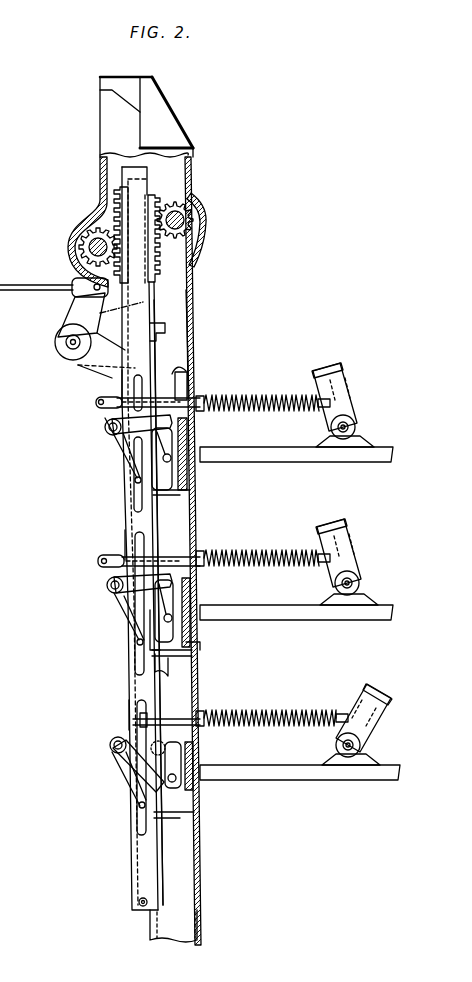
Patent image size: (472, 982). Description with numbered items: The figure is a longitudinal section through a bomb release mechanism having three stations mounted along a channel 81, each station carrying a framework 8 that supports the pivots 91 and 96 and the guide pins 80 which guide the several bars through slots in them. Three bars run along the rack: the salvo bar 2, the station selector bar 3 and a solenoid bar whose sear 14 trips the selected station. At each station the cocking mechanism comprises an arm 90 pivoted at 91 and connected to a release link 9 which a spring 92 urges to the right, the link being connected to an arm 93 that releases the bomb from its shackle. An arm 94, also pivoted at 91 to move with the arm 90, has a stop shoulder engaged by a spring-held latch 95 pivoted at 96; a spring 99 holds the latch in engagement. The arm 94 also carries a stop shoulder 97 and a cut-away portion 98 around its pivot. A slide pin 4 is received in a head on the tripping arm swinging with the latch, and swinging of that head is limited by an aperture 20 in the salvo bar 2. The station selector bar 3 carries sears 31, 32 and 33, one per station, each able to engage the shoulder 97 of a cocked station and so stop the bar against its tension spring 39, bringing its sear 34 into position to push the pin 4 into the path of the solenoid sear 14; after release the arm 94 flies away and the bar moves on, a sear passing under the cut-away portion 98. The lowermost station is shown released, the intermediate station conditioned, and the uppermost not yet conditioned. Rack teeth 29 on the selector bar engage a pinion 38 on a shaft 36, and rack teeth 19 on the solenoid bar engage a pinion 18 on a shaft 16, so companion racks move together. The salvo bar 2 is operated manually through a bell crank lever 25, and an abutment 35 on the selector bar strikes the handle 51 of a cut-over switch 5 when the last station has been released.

The salvo bar 2 is at (170, 497).
The station selector bar 3 is at (128, 512).
The slide pin 4 is at (163, 745).
The cut-over switch 5 is at (197, 383).
The framework 8 is at (197, 643).
The release link 9 is at (171, 719).
The sear 14 is at (150, 623).
The shaft 16 is at (196, 222).
The pinion 18 is at (183, 212).
The rack teeth 19 is at (161, 265).
The aperture 20 is at (163, 676).
The bell crank lever 25 is at (80, 303).
The rack teeth 29 is at (116, 201).
The sear 31 is at (126, 705).
The sear 32 is at (124, 541).
The sear 33 is at (120, 385).
The sear 34 is at (200, 779).
The abutment 35 is at (163, 325).
The shaft 36 is at (88, 246).
The pinion 38 is at (82, 238).
The tension spring 39 is at (138, 913).
The handle 51 is at (190, 367).
The guide pins 80 is at (128, 436).
The channel 81 is at (195, 337).
The arm 90 is at (112, 572).
The pivot 91 is at (108, 435).
The spring 92 is at (270, 397).
The arm 93 is at (343, 371).
The arm 94 is at (130, 588).
The latch 95 is at (177, 426).
The pivot 96 is at (190, 462).
The stop shoulder 97 is at (118, 441).
The cut-away portion 98 is at (108, 417).
The spring 99 is at (192, 653).